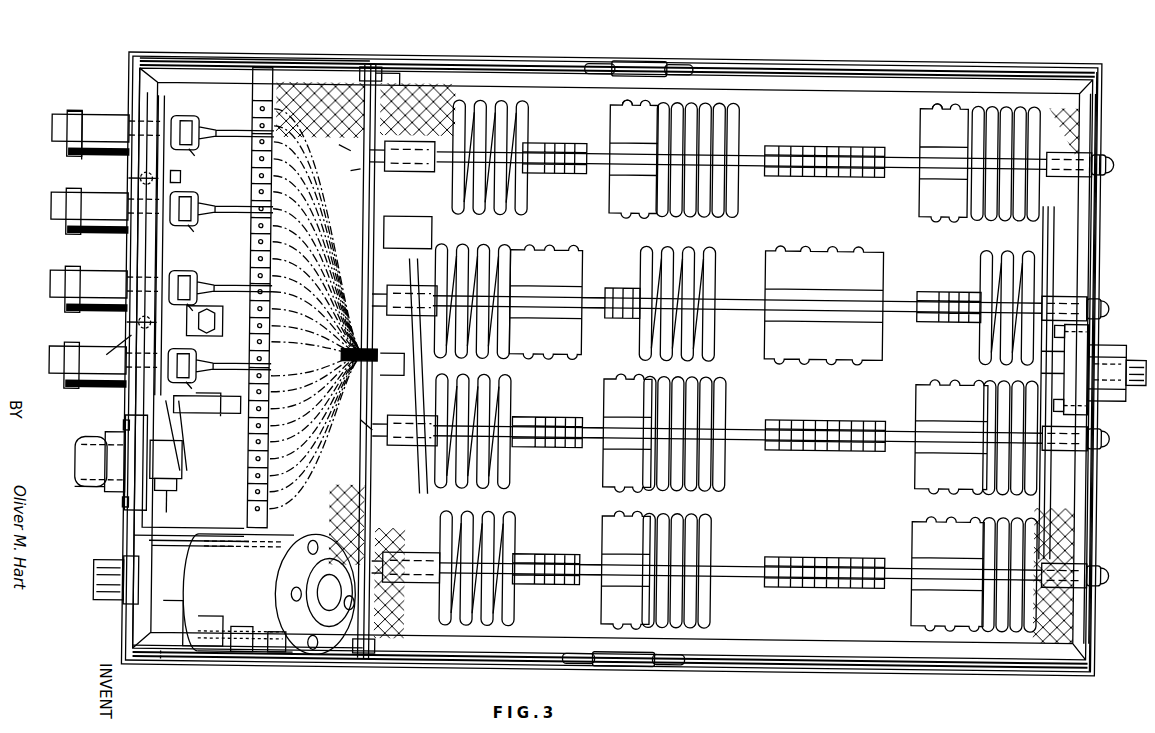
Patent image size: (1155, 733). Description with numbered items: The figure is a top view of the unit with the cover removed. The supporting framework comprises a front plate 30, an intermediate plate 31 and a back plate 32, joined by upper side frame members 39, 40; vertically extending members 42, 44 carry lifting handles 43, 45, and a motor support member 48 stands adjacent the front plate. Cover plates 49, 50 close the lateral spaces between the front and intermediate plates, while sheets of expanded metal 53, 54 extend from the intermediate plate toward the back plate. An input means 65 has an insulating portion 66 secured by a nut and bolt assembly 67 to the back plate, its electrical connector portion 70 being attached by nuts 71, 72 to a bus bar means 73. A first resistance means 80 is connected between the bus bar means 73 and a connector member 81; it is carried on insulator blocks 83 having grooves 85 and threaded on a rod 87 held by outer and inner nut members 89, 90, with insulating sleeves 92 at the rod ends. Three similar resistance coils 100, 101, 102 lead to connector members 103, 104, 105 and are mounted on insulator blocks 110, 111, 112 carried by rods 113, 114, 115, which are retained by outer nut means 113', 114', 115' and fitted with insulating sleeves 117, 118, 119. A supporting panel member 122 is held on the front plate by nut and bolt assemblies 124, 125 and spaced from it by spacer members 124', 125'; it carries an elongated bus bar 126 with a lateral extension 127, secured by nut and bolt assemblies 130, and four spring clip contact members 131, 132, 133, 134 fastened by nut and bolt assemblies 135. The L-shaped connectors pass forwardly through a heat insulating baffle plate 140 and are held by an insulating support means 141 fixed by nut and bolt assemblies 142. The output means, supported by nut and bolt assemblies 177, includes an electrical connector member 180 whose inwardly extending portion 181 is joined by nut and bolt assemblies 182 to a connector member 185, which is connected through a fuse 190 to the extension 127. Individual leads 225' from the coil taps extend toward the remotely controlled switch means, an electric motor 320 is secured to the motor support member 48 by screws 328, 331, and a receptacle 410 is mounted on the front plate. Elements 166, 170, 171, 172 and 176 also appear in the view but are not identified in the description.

The front plate 30 is at (140, 538).
The intermediate plate 31 is at (378, 70).
The back plate 32 is at (1097, 208).
The upper side frame member 39 is at (783, 657).
The upper side frame member 40 is at (738, 62).
The first vertically extending member 42 is at (640, 658).
The lifting handle 43 is at (688, 658).
The second vertically extending member 44 is at (634, 55).
The lifting handle 45 is at (596, 58).
The motor support member 48 is at (205, 650).
The first cover plate 49 is at (280, 650).
The cover plate 50 is at (245, 60).
The first sheet of expanded metal 53 is at (1080, 658).
The sheet of expanded metal 54 is at (915, 68).
The input means 65 is at (1122, 310).
The insulating portion 66 is at (1112, 336).
The nut and bolt assembly 67 is at (1092, 320).
The electrical connector portion 70 is at (1142, 374).
The nut 71 is at (1044, 360).
The nut 72 is at (1107, 375).
The bus bar means 73 is at (1045, 224).
The first resistance means 80 is at (1089, 138).
The connector member 81 is at (409, 163).
The insulator blocks 83 is at (746, 160).
The grooves 85 is at (772, 116).
The stainless steel rod 87 is at (347, 170).
The outer nut member 89 is at (1125, 156).
The inner nut member 90 is at (1110, 147).
The sleeves 92 is at (748, 181).
The resistance coil 100 is at (734, 293).
The resistance coil 101 is at (737, 426).
The resistance coil 102 is at (738, 560).
The connector member 103 is at (408, 232).
The connector member 104 is at (417, 325).
The connector member 105 is at (408, 372).
The insulator blocks 110 is at (599, 322).
The insulator blocks 111 is at (575, 450).
The insulator blocks 112 is at (572, 590).
The rod 113 is at (390, 273).
The outer nut means 113' is at (1095, 293).
The rod 114 is at (357, 447).
The outer nut means 114' is at (1093, 450).
The rod 115 is at (195, 564).
The outer nut means 115' is at (1096, 562).
The insulating sleeves 117 is at (412, 288).
The insulating sleeves 118 is at (754, 464).
The insulating sleeves 119 is at (753, 561).
The supporting panel member 122 is at (145, 250).
The nut and bolt assembly 124 is at (119, 173).
The spacer member 124' is at (98, 135).
The nut and bolt assembly 125 is at (116, 321).
The spacer member 125' is at (108, 350).
The elongated bus bar 126 is at (253, 232).
The laterally extending extension 127 is at (212, 404).
The nut and bolt assemblies 130 is at (184, 176).
The spring clip contact member 131 is at (188, 115).
The spring clip contact member 132 is at (196, 195).
The spring clip contact member 133 is at (193, 272).
The spring clip contact member 134 is at (196, 350).
The nut and bolt assemblies 135 is at (213, 269).
The heat insulating baffle plate 140 is at (398, 70).
The support means 141 is at (342, 151).
The nut and bolt assemblies 142 is at (362, 68).
The external terminal 166 is at (55, 278).
The external terminal 170 is at (53, 126).
The external terminal 171 is at (53, 200).
The external terminal 172 is at (58, 352).
The switch plate 176 is at (130, 430).
The nut and bolt assemblies 177 is at (128, 422).
The electrical connector member 180 is at (82, 455).
The inwardly extending portion 181 is at (188, 455).
The nut and bolt assemblies 182 is at (176, 495).
The connector member 185 is at (182, 484).
The fuse 190 is at (190, 418).
The individual leads 225' is at (324, 309).
The electric motor 320 is at (340, 650).
The screw 328 is at (182, 660).
The screw 331 is at (240, 652).
The receptacle 410 is at (103, 566).